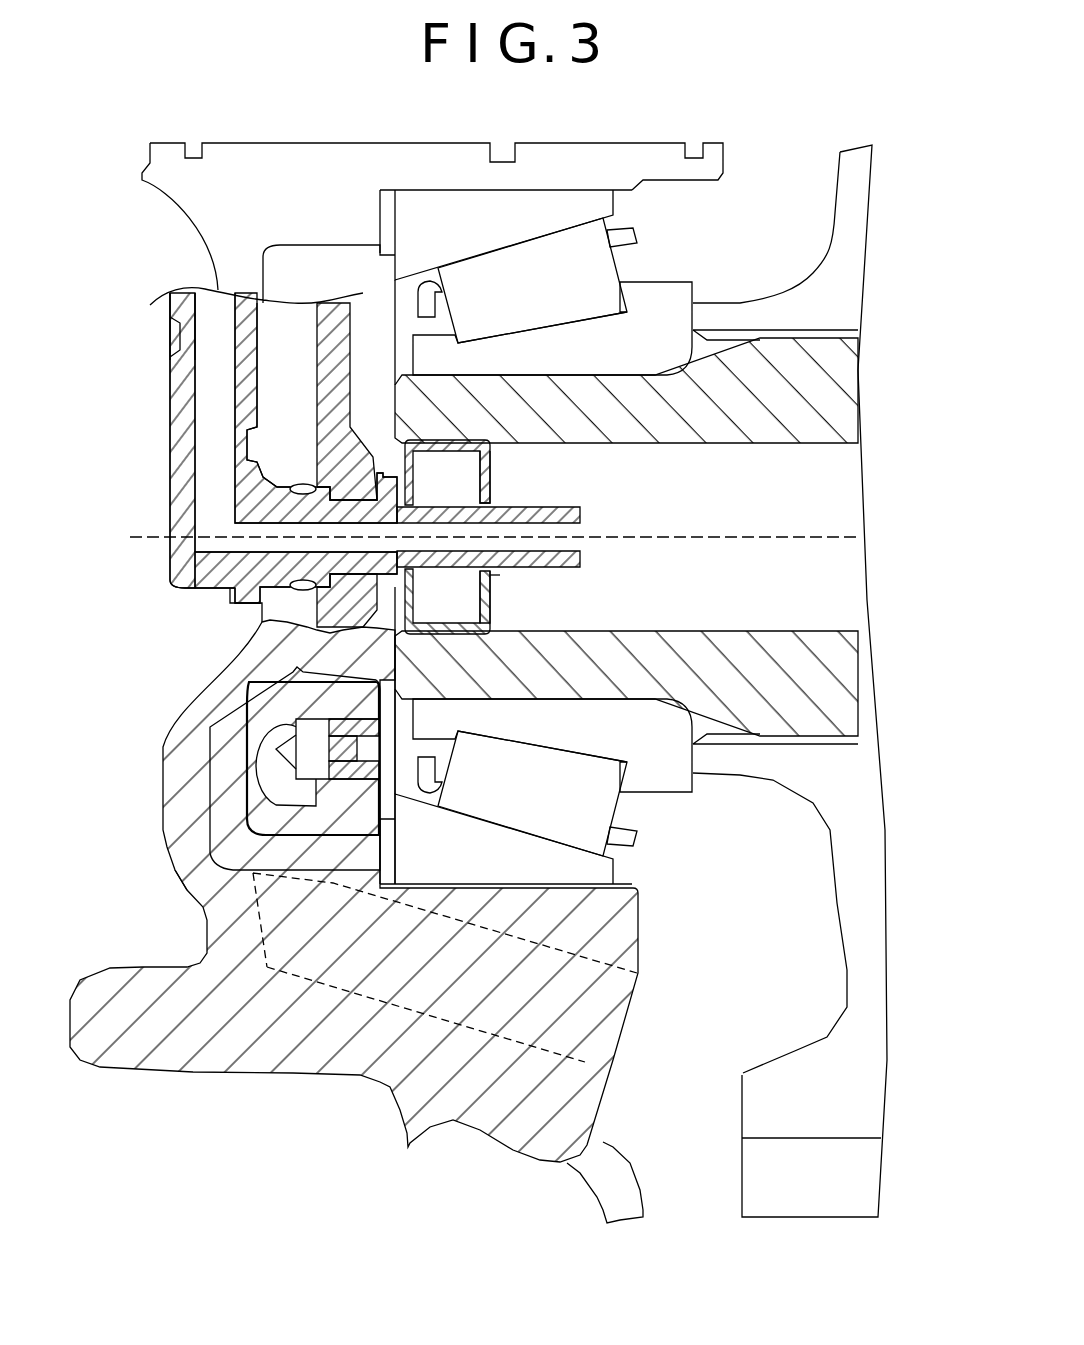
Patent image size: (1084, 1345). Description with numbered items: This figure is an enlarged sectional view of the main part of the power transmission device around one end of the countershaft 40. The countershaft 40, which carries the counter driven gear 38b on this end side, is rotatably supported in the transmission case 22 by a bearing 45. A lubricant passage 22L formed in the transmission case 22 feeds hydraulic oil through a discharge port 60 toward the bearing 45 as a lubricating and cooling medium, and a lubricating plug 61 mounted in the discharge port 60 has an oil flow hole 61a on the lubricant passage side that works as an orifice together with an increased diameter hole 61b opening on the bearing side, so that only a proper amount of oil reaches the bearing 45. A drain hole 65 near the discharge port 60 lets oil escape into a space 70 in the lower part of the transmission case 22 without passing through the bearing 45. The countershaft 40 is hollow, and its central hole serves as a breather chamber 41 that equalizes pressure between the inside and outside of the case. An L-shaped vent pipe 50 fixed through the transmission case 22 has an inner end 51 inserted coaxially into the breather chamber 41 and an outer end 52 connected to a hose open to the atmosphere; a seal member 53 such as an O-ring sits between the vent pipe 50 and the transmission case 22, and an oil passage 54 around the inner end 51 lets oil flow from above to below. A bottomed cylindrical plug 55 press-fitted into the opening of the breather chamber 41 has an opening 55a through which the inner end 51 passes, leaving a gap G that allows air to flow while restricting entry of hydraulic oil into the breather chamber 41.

The transmission case 22 is at (178, 782).
The lubricant passage 22L is at (187, 895).
The counter driven gear 38b is at (747, 1103).
The countershaft 40 is at (848, 383).
The breather chamber 41 is at (812, 518).
The bearing 45 is at (652, 817).
The vent pipe 50 is at (172, 452).
The inner end 51 is at (577, 518).
The outer end 52 is at (180, 328).
The seal member 53 is at (290, 487).
The oil passage 54 is at (388, 473).
The plug 55 is at (490, 462).
The opening 55a is at (493, 507).
The discharge port 60 is at (327, 761).
The lubricating plug 61 is at (299, 779).
The oil flow hole 61a is at (340, 762).
The increased diameter hole 61b is at (382, 872).
The drain hole 65 is at (337, 990).
The space 70 is at (736, 1013).
The gap G is at (497, 575).